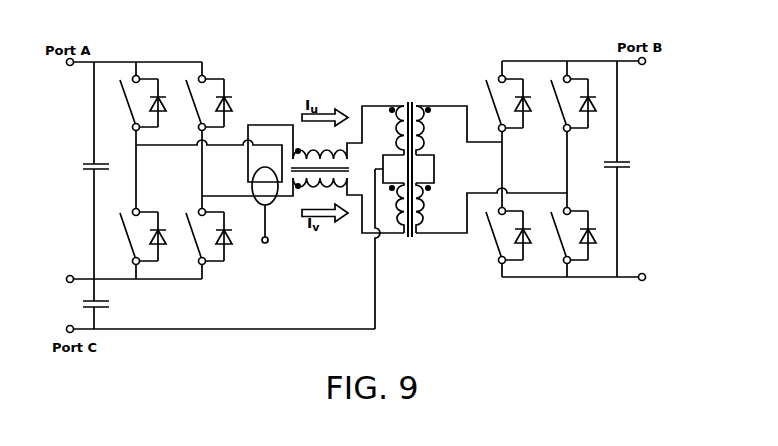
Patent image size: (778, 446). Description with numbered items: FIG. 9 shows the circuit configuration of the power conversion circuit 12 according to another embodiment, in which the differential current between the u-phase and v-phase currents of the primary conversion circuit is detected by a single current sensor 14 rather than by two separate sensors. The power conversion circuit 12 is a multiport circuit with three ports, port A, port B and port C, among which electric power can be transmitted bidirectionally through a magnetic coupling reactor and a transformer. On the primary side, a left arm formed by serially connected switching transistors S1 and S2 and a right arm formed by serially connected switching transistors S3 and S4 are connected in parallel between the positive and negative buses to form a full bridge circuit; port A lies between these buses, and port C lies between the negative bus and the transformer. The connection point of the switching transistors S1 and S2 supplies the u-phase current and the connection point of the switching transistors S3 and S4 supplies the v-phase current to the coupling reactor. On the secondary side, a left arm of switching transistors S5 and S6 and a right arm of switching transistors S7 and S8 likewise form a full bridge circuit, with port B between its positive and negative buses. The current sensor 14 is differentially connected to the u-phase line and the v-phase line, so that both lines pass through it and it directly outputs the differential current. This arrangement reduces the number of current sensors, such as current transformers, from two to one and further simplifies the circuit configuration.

The power conversion circuit 12 is at (419, 70).
The current sensor 14 is at (258, 212).
The switching transistor S1 is at (134, 135).
The switching transistor S2 is at (134, 244).
The switching transistor S3 is at (201, 135).
The switching transistor S4 is at (202, 244).
The switching transistor S5 is at (503, 134).
The switching transistor S6 is at (503, 243).
The switching transistor S7 is at (569, 134).
The switching transistor S8 is at (567, 243).